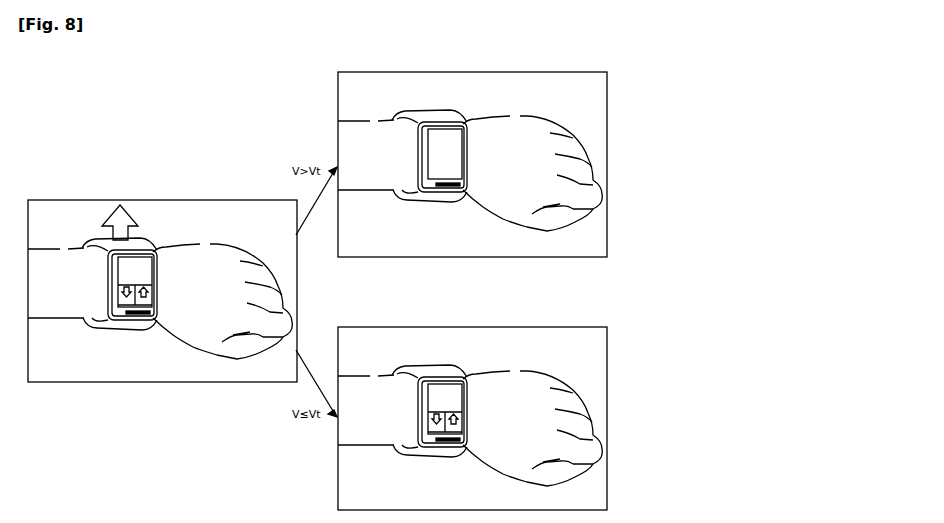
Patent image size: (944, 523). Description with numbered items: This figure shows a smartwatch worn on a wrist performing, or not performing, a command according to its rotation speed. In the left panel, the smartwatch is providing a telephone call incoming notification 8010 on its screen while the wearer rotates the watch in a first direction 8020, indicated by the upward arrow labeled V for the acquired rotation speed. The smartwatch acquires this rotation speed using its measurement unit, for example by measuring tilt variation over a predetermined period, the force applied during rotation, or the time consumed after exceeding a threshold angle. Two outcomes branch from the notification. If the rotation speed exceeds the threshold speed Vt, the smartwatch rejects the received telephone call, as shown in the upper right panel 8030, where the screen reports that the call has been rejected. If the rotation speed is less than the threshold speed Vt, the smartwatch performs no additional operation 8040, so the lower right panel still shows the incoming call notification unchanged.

The telephone call incoming notification 8010 is at (153, 267).
The first direction 8020 is at (123, 218).
The rejection of the received telephone call 8030 is at (484, 111).
The no additional operation 8040 is at (484, 367).